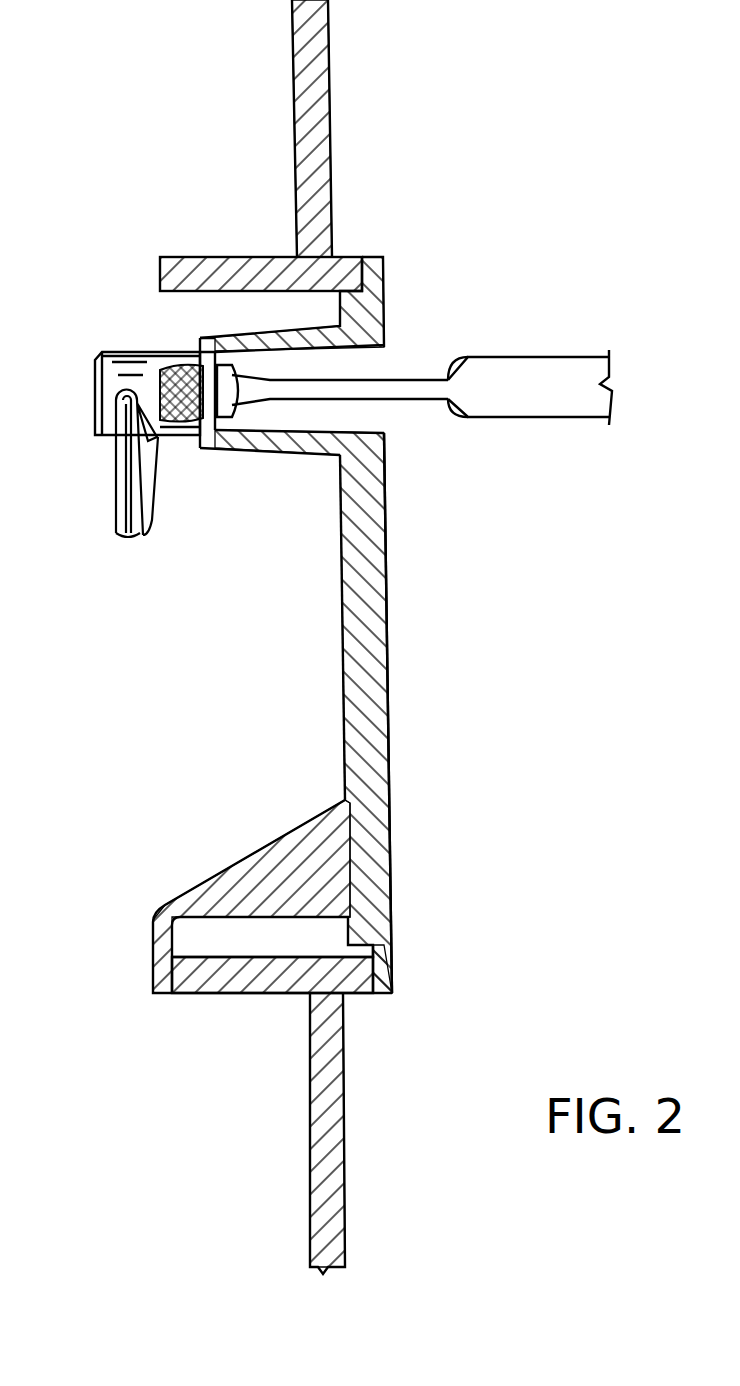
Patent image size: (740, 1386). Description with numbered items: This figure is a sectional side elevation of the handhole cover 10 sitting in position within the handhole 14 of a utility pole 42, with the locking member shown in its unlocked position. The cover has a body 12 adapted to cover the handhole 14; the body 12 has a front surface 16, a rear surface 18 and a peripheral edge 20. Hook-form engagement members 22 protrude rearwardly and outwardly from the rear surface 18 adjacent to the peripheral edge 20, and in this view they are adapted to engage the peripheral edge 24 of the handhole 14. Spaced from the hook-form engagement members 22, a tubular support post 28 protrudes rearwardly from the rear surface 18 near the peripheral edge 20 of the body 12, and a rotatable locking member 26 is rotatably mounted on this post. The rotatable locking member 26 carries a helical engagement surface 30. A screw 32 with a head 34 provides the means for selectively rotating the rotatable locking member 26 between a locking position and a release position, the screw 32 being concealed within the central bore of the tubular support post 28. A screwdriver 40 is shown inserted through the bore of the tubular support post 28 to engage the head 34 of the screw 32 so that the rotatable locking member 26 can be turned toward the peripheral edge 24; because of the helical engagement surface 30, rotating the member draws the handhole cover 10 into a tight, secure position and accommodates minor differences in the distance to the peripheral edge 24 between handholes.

The handhole cover 10 is at (483, 841).
The body 12 is at (375, 702).
The handhole 14 is at (220, 648).
The front surface 16 is at (388, 582).
The rear surface 18 is at (343, 685).
The peripheral edge 20 is at (375, 268).
The hook-form engagement members 22 is at (152, 930).
The peripheral edge of handhole 24 is at (175, 257).
The rotatable locking member 26 is at (112, 470).
The tubular support post 28 is at (280, 447).
The helical engagement surface 30 is at (160, 490).
The screw 32 is at (180, 363).
The head 34 is at (237, 348).
The screwdriver 40 is at (417, 377).
The utility pole 42 is at (343, 1160).